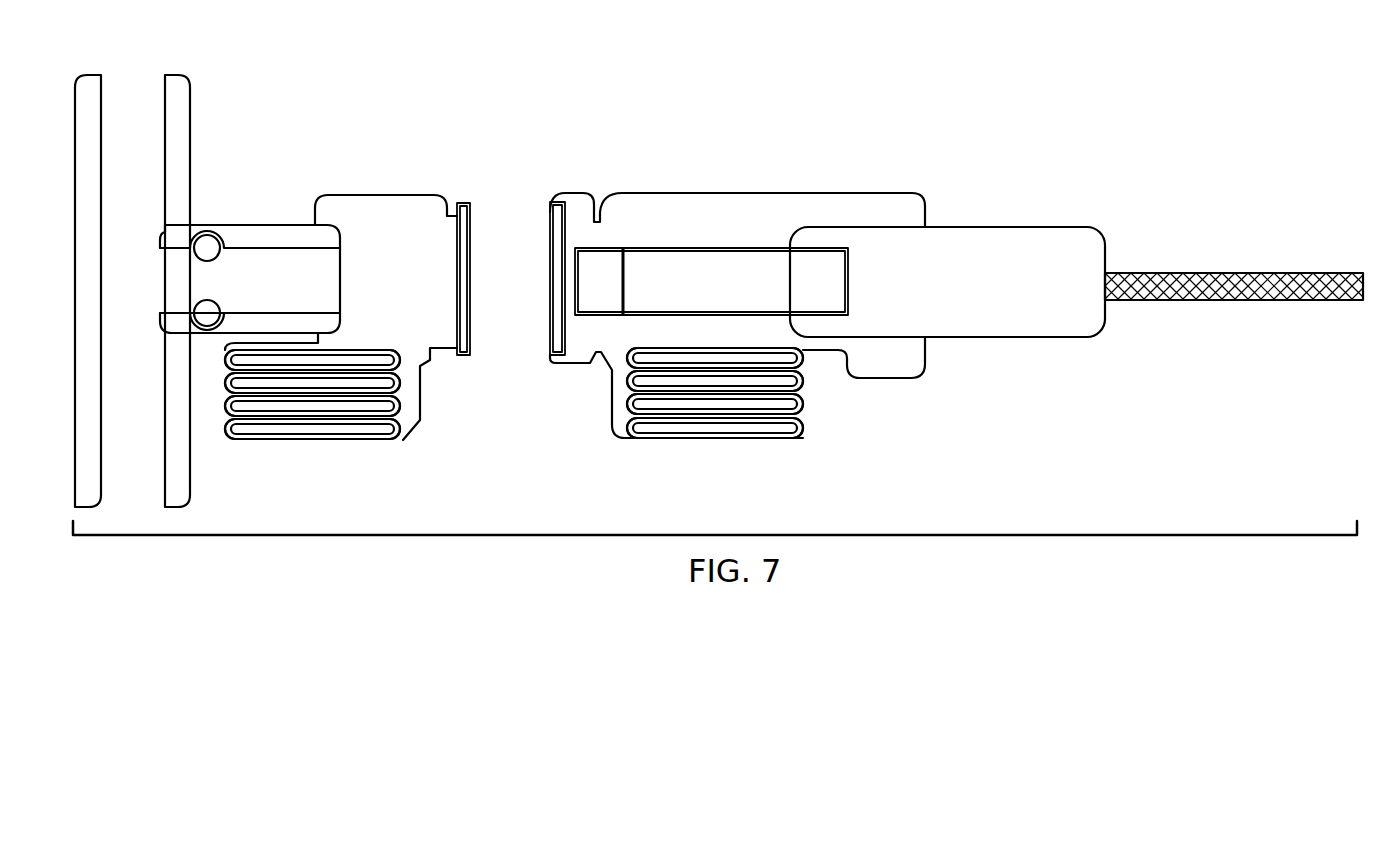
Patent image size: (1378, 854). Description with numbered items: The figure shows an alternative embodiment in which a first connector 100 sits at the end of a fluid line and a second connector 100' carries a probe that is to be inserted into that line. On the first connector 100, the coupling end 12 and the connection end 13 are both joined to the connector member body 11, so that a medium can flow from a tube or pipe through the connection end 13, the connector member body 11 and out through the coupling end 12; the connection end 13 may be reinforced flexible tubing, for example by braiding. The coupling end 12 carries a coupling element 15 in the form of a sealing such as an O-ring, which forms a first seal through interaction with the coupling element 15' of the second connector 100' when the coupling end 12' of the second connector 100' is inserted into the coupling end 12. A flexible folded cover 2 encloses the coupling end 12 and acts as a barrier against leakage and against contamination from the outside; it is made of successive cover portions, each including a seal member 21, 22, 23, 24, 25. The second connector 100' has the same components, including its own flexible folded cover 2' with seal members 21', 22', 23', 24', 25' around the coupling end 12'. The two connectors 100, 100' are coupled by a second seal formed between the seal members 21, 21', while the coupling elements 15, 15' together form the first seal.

The first connector 100 is at (266, 283).
The second connector 100' is at (737, 264).
The coupling end 12 is at (250, 242).
The coupling end 12' is at (711, 233).
The coupling element 15 is at (218, 238).
The coupling element 15' is at (630, 232).
The seal member 21 is at (450, 238).
The seal member 21' is at (550, 238).
The flexible folded cover 2 is at (370, 394).
The flexible folded cover 2' is at (678, 403).
The seal member 22 is at (351, 455).
The seal member 23 is at (351, 422).
The seal member 24 is at (261, 425).
The seal member 25 is at (261, 395).
The seal member 22' is at (757, 458).
The seal member 23' is at (757, 426).
The seal member 24' is at (757, 395).
The seal member 25' is at (757, 356).
The connector member body 11 is at (1086, 320).
The connection end 13 is at (1165, 272).